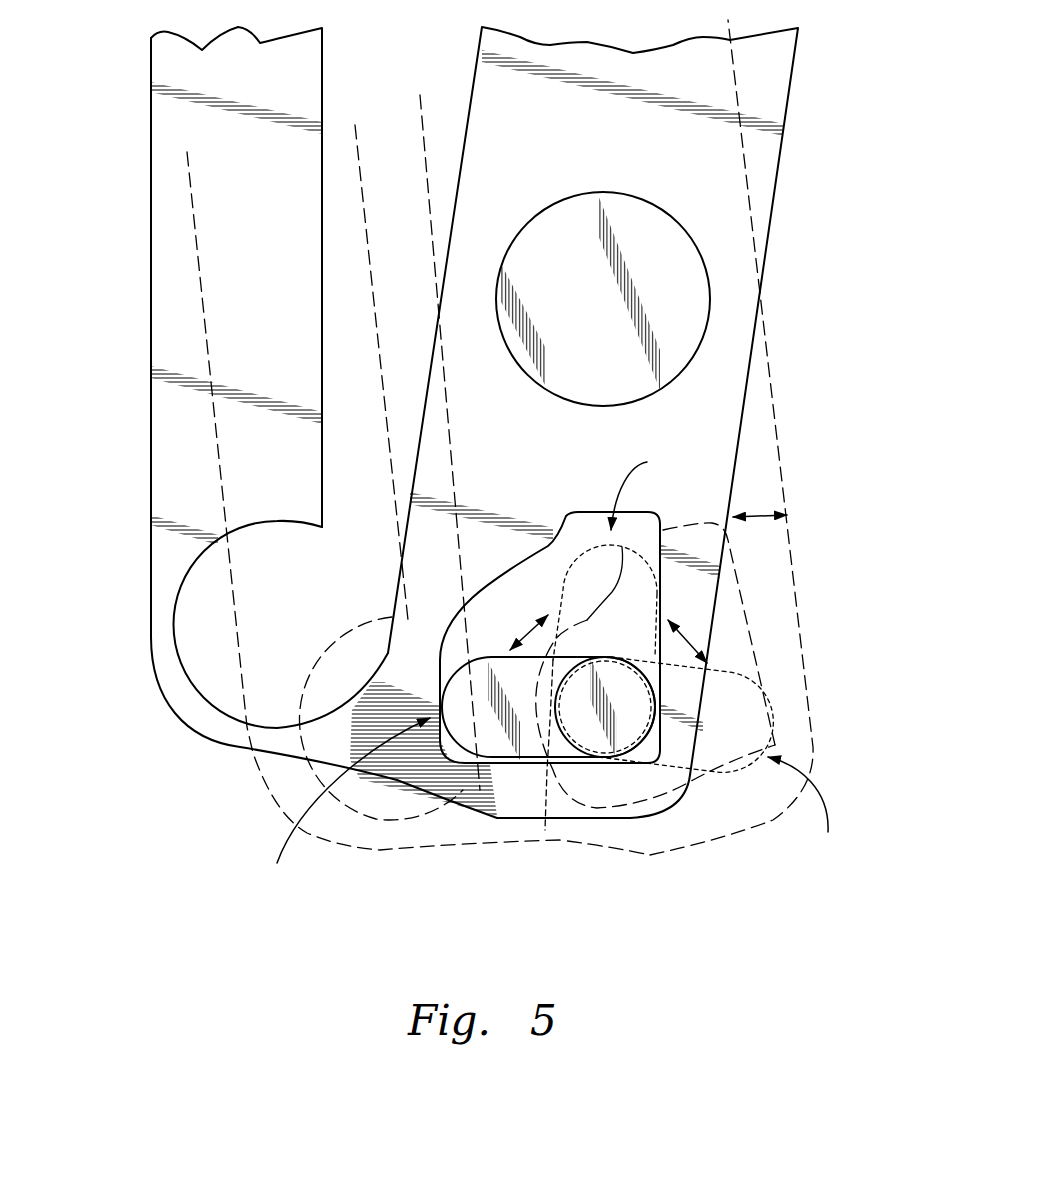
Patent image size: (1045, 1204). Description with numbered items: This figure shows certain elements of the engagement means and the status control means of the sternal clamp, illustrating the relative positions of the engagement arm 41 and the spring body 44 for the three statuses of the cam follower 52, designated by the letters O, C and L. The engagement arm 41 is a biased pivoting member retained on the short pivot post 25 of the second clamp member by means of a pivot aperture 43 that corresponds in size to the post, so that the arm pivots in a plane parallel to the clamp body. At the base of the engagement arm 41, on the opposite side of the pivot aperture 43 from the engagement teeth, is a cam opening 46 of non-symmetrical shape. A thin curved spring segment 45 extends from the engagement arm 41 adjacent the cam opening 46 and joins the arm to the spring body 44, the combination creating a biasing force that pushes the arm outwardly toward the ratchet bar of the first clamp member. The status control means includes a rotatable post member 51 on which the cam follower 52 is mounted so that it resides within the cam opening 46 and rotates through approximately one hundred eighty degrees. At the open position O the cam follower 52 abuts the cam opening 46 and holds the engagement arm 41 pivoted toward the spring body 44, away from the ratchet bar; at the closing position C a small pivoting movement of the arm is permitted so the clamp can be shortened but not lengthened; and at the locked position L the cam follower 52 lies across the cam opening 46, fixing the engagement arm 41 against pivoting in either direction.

The pivot post 25 is at (605, 325).
The engagement arm 41 is at (775, 210).
The pivot aperture 43 is at (570, 193).
The spring body 44 is at (150, 170).
The spring segment 45 is at (193, 723).
The cam opening 46 is at (510, 572).
The post member 51 is at (545, 830).
The cam follower 52 is at (578, 553).
The closing position C is at (640, 486).
The locked position L is at (341, 808).
The open position O is at (802, 809).